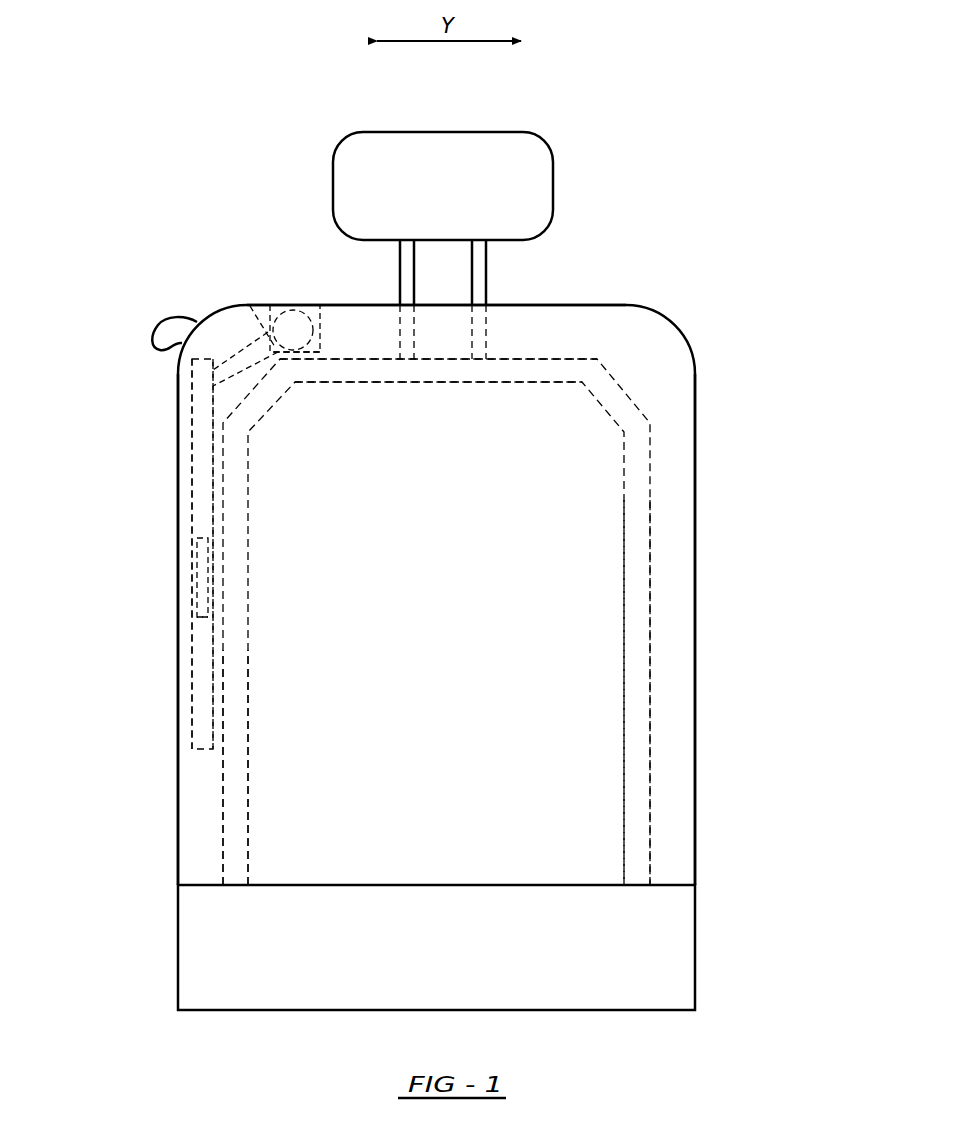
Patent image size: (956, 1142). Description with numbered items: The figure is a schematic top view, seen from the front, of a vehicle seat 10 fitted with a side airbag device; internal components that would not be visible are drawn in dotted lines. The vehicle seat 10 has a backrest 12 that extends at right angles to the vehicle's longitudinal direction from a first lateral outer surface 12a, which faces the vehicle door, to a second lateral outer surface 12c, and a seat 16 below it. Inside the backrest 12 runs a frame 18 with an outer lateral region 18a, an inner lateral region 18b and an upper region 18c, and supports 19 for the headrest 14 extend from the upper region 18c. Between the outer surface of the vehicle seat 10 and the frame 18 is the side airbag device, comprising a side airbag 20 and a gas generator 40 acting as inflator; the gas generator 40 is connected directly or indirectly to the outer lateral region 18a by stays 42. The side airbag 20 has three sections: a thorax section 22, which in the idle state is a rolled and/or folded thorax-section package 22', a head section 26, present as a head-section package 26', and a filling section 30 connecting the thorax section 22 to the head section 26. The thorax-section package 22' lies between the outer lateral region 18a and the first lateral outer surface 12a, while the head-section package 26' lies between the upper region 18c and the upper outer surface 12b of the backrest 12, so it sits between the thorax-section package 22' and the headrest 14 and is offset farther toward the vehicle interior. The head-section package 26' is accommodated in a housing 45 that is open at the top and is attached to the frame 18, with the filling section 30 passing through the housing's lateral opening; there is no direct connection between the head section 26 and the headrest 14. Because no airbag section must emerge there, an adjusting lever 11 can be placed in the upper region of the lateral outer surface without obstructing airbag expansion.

The vehicle seat 10 is at (737, 560).
The adjusting lever 11 is at (168, 322).
The backrest 12 is at (663, 392).
The first lateral outer surface 12a is at (176, 585).
The upper outer surface 12b is at (273, 300).
The second lateral outer surface 12c is at (699, 795).
The headrest 14 is at (515, 158).
The seat 16 is at (673, 963).
The frame 18 is at (635, 465).
The outer lateral region 18a is at (240, 826).
The inner lateral region 18b is at (640, 683).
The upper region 18c is at (538, 370).
The supports 19 is at (476, 268).
The side airbag 20 is at (200, 430).
The thorax section 22 is at (155, 567).
The thorax-section package 22' is at (155, 554).
The head section 26 is at (285, 263).
The head-section package 26' is at (295, 279).
The filling section 30 is at (247, 357).
The gas generator 40 is at (195, 612).
The stays 42 is at (222, 555).
The housing 45 is at (322, 328).